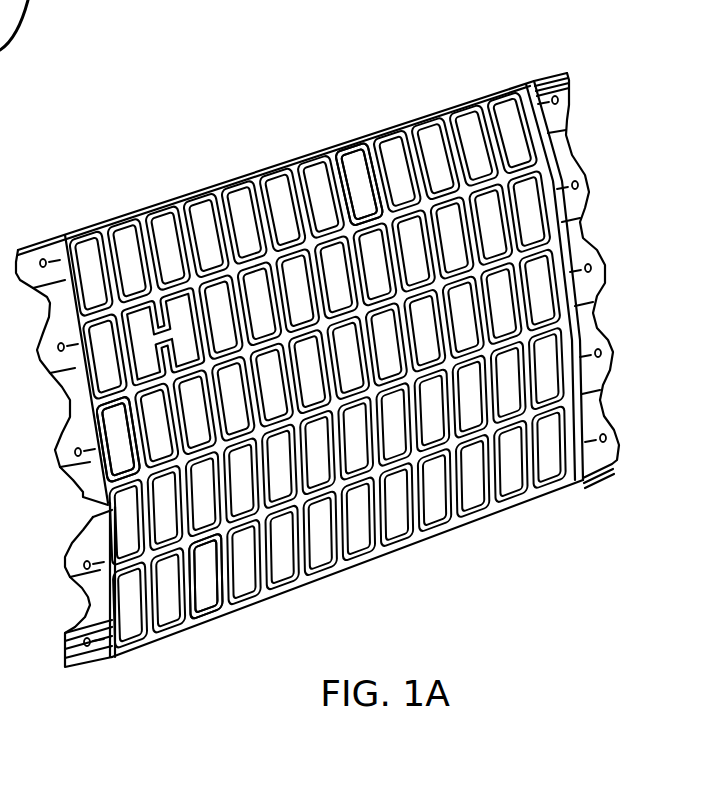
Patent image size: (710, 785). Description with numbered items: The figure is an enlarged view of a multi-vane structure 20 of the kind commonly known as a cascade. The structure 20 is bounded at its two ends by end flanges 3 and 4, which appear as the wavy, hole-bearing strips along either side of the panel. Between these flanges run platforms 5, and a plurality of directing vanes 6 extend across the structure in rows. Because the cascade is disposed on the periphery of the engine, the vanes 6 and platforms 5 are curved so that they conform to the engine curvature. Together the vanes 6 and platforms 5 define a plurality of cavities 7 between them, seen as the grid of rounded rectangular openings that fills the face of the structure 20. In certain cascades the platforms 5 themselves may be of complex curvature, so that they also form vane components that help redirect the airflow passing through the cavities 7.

The multi-vane structure 20 is at (493, 77).
The end flange 3 is at (570, 208).
The end flange 4 is at (58, 362).
The platform 5 is at (540, 86).
The directing vane 6 is at (370, 183).
The cavity 7 is at (276, 200).